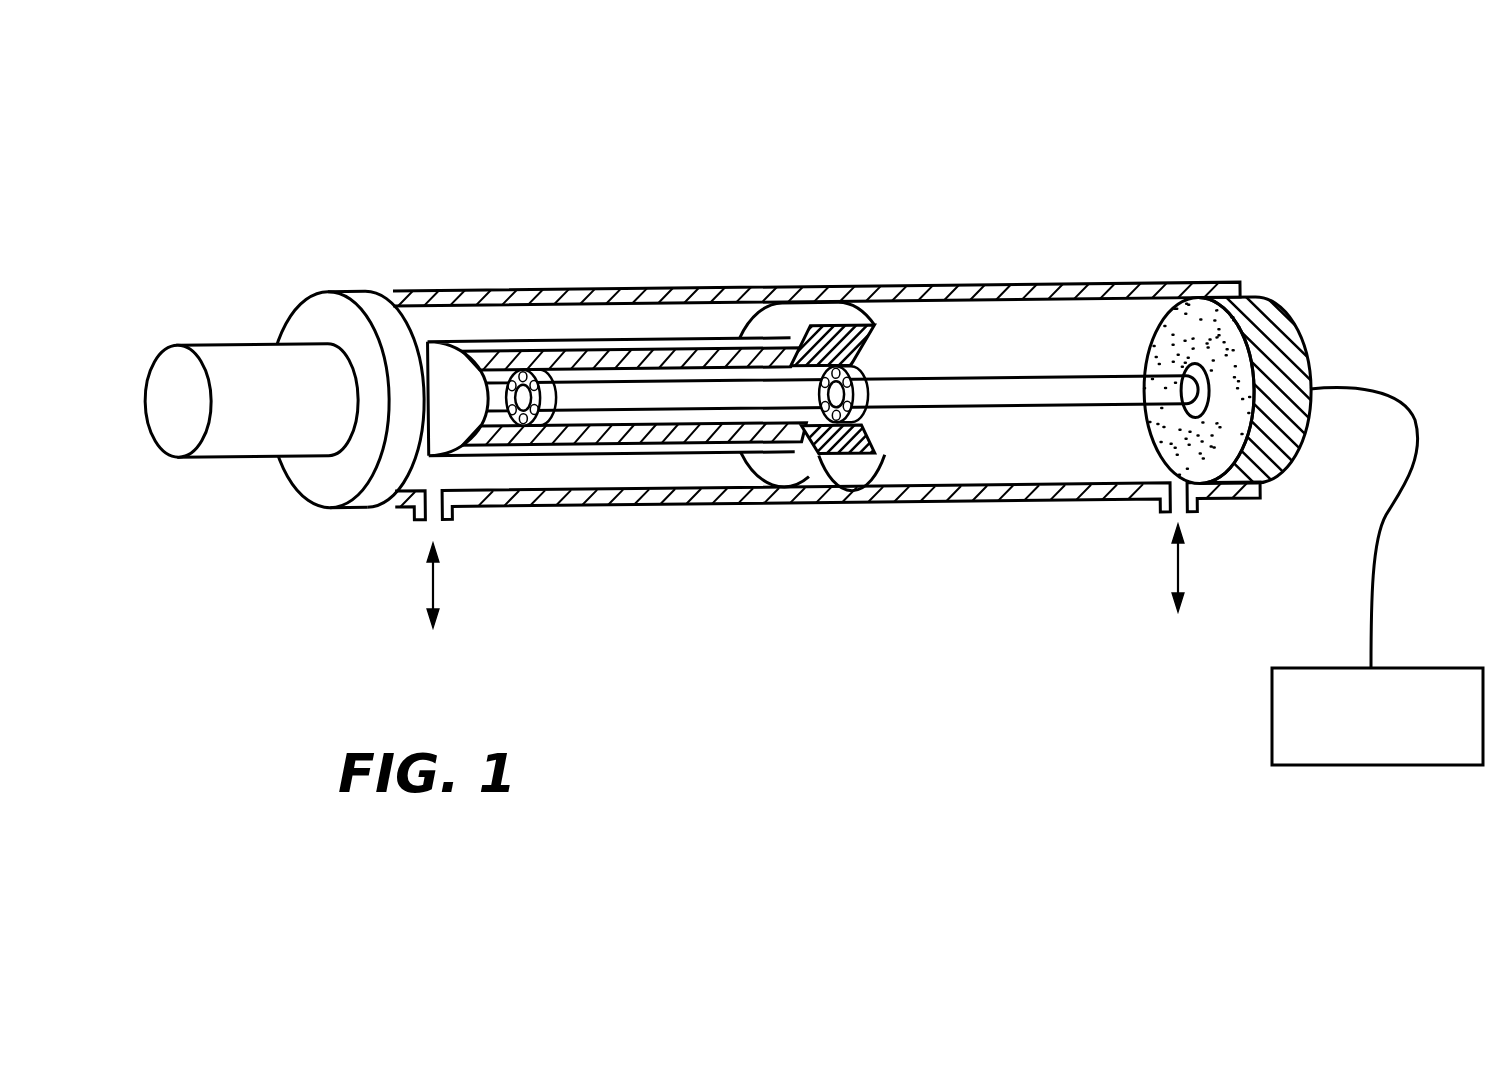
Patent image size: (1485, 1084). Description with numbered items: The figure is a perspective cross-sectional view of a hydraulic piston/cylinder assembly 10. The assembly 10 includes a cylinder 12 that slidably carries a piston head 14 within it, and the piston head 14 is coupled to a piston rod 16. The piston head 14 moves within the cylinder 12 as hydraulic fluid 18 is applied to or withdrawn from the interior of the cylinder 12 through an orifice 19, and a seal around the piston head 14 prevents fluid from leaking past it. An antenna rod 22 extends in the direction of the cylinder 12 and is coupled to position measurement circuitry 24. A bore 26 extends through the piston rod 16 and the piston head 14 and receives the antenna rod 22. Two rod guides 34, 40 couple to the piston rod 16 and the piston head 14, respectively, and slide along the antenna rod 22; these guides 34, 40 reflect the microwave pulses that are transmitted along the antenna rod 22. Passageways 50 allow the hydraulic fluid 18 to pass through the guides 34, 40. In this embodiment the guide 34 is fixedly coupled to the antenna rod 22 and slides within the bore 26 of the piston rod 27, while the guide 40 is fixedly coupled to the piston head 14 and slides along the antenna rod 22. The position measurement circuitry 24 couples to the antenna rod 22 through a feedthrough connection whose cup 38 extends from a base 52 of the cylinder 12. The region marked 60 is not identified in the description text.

The hydraulic piston/cylinder assembly 10 is at (388, 210).
The cylinder 12 is at (1205, 246).
The piston head 14 is at (762, 470).
The piston rod 16 is at (230, 458).
The hydraulic fluid 18 is at (601, 340).
The orifice 19 is at (430, 510).
The antenna rod 22 is at (1078, 380).
The position measurement circuitry 24 is at (1272, 727).
The bore 26 is at (680, 381).
The piston rod 27 is at (706, 350).
The rod guide 34 is at (547, 416).
The feedthrough connection cup 38 is at (1177, 362).
The rod guide 40 is at (871, 428).
The passageways 50 is at (506, 412).
The base 52 is at (1298, 322).
The fluid chamber 60 is at (1014, 362).